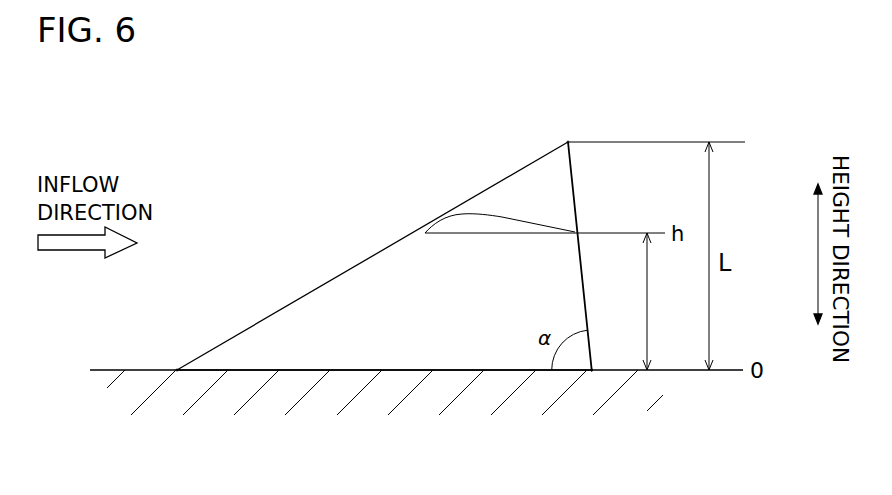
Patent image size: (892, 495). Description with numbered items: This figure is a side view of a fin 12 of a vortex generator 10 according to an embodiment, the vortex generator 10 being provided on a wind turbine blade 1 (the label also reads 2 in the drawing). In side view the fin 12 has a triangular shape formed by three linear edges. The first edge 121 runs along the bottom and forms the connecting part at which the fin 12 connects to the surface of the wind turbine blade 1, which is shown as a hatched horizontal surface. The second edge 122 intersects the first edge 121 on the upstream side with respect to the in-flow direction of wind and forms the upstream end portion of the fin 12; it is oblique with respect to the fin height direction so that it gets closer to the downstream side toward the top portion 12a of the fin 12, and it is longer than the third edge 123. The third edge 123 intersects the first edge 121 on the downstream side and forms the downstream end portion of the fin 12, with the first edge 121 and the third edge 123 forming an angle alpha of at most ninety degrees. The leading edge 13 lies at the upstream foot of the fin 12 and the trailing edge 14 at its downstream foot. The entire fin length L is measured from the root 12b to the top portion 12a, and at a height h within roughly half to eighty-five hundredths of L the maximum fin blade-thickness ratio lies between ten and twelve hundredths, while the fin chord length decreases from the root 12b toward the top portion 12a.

The vortex generator 10 is at (263, 161).
The wind turbine blade 1 is at (411, 366).
The hull / wall surface 2 is at (118, 371).
The fin 12 is at (481, 191).
The top portion 12a is at (568, 136).
The root 12b is at (539, 372).
The first edge 121 is at (408, 372).
The second edge 122 is at (368, 259).
The third edge 123 is at (574, 197).
The leading edge 13 is at (177, 370).
The trailing edge 14 is at (597, 369).